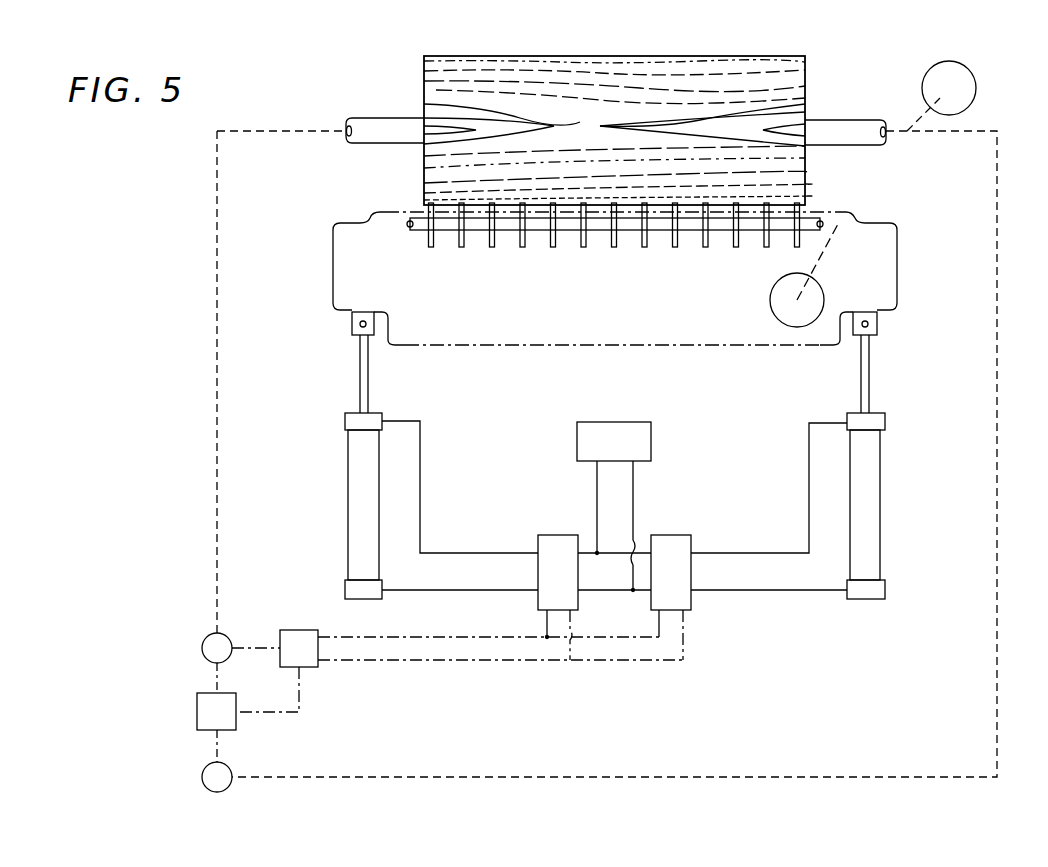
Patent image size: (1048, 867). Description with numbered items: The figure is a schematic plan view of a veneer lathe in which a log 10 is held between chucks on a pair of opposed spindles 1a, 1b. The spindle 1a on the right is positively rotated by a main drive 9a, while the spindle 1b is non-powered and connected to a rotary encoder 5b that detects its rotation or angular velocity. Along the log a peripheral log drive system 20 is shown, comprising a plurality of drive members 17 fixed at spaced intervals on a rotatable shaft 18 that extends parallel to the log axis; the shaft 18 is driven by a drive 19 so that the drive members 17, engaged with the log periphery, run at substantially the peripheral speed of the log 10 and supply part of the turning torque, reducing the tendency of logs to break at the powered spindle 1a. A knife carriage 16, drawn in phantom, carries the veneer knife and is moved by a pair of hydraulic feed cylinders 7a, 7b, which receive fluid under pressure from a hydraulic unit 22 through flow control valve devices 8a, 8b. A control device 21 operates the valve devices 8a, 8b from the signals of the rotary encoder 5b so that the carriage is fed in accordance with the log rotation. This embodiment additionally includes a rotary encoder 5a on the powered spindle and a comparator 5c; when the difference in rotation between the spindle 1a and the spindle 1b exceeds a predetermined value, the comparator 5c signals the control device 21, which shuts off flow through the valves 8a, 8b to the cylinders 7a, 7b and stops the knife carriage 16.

The spindle 1a is at (835, 125).
The spindle 1b is at (383, 122).
The rotary encoder 5a is at (205, 772).
The rotary encoder 5b is at (206, 640).
The comparator 5c is at (200, 705).
The hydraulic feed cylinder 7a is at (873, 495).
The hydraulic feed cylinder 7b is at (355, 503).
The flow control valve device 8a is at (676, 540).
The flow control valve device 8b is at (548, 540).
The main drive 9a is at (960, 100).
The log 10 is at (430, 70).
The knife carriage 16 is at (506, 345).
The drive members 17 is at (436, 248).
The rotatable shaft 18 is at (693, 228).
The drive 19 is at (778, 300).
The peripheral log drive system 20 is at (630, 297).
The control device 21 is at (298, 632).
The hydraulic unit 22 is at (642, 435).